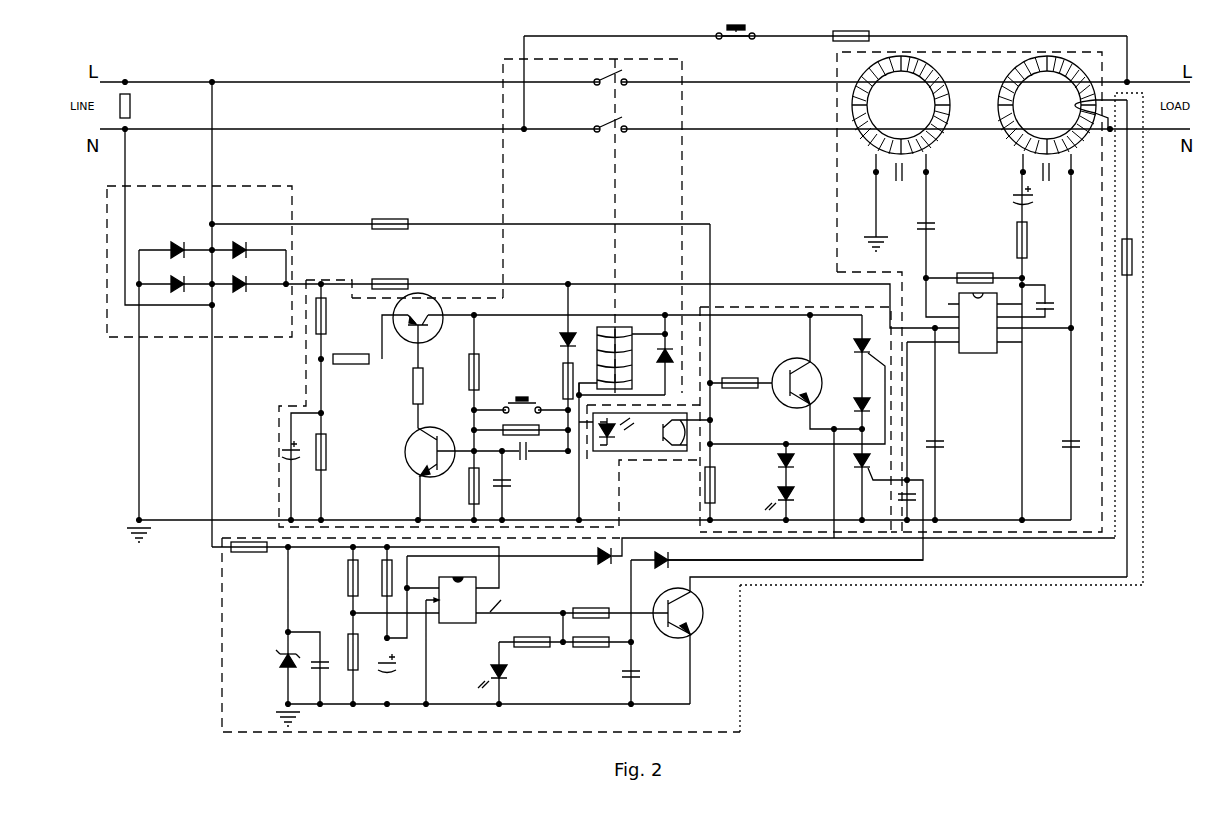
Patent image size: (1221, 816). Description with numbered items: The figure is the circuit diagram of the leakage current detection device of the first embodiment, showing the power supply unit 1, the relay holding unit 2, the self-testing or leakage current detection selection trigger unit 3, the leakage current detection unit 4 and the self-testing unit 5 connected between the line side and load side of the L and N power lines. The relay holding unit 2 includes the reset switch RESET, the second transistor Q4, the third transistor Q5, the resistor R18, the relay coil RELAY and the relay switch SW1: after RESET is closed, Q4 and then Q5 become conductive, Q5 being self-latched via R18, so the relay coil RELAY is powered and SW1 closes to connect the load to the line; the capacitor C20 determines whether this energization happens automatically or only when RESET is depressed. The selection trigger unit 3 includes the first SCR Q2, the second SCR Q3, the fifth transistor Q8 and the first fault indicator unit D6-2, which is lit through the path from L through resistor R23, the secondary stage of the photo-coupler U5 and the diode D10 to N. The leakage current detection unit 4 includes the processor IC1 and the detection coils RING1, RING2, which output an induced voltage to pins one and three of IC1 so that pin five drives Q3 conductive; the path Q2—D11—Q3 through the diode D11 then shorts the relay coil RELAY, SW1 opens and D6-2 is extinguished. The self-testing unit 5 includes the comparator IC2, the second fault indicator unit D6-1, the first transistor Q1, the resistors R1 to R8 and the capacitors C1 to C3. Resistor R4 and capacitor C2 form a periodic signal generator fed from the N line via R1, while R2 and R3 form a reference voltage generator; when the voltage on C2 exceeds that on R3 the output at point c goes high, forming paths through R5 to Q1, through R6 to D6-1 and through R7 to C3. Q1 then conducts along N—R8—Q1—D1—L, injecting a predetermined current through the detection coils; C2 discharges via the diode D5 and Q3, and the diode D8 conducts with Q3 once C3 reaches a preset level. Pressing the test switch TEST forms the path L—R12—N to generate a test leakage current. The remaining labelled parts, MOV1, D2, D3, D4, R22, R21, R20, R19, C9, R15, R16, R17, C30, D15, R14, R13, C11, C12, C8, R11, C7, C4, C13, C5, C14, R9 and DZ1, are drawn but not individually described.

The power supply unit 1 is at (252, 191).
The relay holding unit 2 is at (512, 175).
The self-testing or leakage current detection selection trigger unit 3 is at (758, 308).
The leakage current detection unit 4 is at (847, 205).
The self-testing unit 5 is at (742, 655).
The varistor MOV1 is at (156, 106).
The diode D1 is at (173, 243).
The diode D2 is at (251, 243).
The diode D3 is at (167, 291).
The diode D4 is at (246, 291).
The resistor R23 is at (390, 216).
The resistor R22 is at (390, 276).
The resistor R21 is at (336, 316).
The resistor R20 is at (351, 351).
The resistor R19 is at (336, 452).
The capacitor C9 is at (277, 451).
The third transistor Q5 is at (415, 330).
The resistor R15 is at (478, 381).
The second transistor Q4 is at (428, 462).
The resistor R18 is at (460, 372).
The resistor R16 is at (493, 427).
The resistor R17 is at (459, 486).
The reset switch RESET is at (519, 398).
The capacitor C20 is at (527, 458).
The capacitor C30 is at (513, 490).
The diode D10 is at (662, 398).
The relay coil RELAY is at (612, 340).
The diode D15 is at (655, 367).
The photo-coupler U5 is at (640, 432).
The resistor R14 is at (725, 485).
The resistor R13 is at (739, 375).
The fifth transistor Q8 is at (806, 383).
The first SCR Q2 is at (849, 345).
The diode D11 is at (845, 405).
The second SCR Q3 is at (855, 469).
The first fault indicator unit D6-2 is at (795, 500).
The capacitor C11 is at (893, 500).
The capacitor C12 is at (950, 447).
The capacitor C8 is at (1058, 447).
The processor IC1 is at (975, 323).
The resistor R11 is at (975, 270).
The capacitor C7 is at (1052, 296).
The capacitor C4 is at (902, 180).
The capacitor C13 is at (910, 225).
The capacitor C5 is at (1052, 179).
The capacitor C14 is at (1008, 195).
The resistor R9 is at (1009, 240).
The resistor R8 is at (1137, 257).
The detection coil RING2 is at (901, 105).
The detection coil RING1 is at (1047, 105).
The relay switch SW1 is at (602, 101).
The test switch TEST is at (735, 22).
The resistor R12 is at (851, 27).
The resistor R1 is at (249, 558).
The zener diode DZ1 is at (273, 660).
The capacitor C1 is at (327, 655).
The resistor R2 is at (363, 578).
The resistor R3 is at (363, 652).
The resistor R4 is at (394, 586).
The capacitor C2 is at (396, 662).
The comparator IC2 is at (455, 600).
The point C c is at (503, 600).
The resistor R5 is at (591, 604).
The resistor R6 is at (532, 634).
The resistor R7 is at (591, 633).
The second fault indicator unit D6-1 is at (512, 676).
The capacitor C3 is at (618, 678).
The diode D5 is at (607, 565).
The diode D8 is at (662, 570).
The first transistor Q1 is at (690, 613).